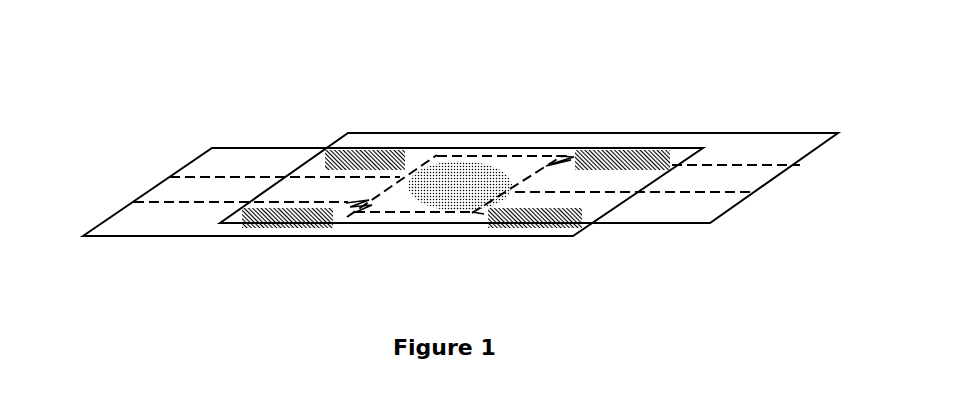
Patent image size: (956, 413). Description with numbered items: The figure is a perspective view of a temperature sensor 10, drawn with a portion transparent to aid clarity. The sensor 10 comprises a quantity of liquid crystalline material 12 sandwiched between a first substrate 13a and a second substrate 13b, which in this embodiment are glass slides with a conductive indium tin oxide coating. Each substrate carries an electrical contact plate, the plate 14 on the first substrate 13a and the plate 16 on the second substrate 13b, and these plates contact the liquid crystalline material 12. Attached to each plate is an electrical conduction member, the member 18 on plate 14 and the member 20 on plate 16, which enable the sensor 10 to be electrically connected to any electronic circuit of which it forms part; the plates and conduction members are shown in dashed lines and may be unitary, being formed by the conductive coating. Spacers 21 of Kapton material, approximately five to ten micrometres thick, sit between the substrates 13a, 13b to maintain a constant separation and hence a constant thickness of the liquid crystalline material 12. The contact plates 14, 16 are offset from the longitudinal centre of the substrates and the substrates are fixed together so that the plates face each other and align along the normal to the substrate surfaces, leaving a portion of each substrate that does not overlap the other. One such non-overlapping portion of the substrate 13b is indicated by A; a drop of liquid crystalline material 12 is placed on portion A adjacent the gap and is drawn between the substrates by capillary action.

The temperature sensor 10 is at (448, 174).
The liquid crystalline material 12 is at (460, 172).
The first substrate 13a is at (760, 142).
The second substrate 13b is at (250, 162).
The electrical contact plate 14 is at (437, 154).
The electrical contact plate 16 is at (484, 214).
The electrical conduction member 18 is at (717, 182).
The electrical conduction member 20 is at (178, 190).
The spacers 21 is at (370, 157).
The portion of the substrate A is at (220, 173).